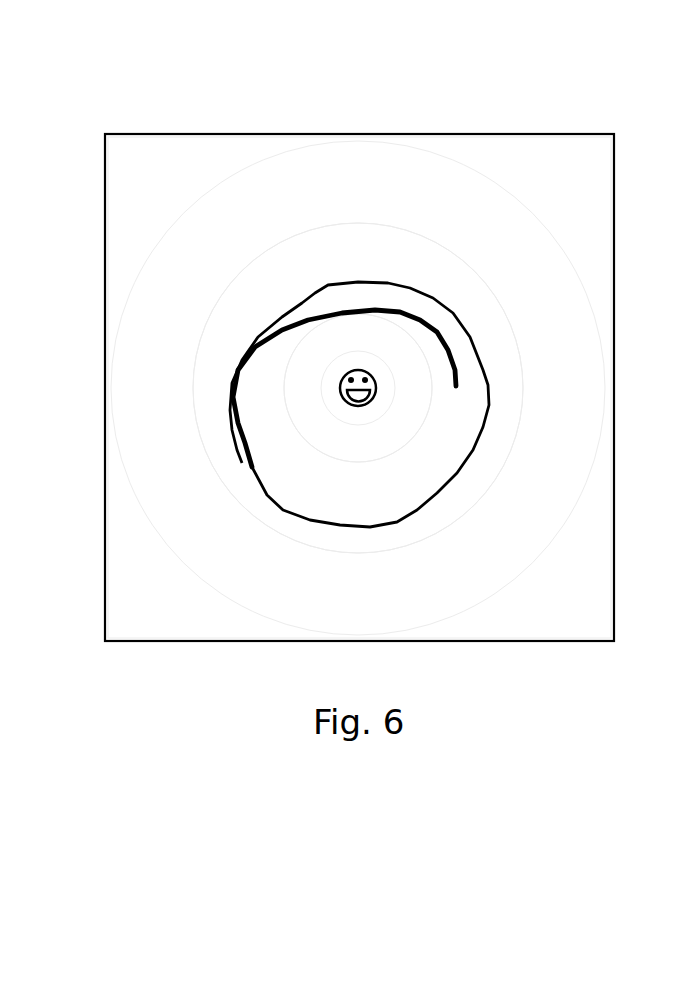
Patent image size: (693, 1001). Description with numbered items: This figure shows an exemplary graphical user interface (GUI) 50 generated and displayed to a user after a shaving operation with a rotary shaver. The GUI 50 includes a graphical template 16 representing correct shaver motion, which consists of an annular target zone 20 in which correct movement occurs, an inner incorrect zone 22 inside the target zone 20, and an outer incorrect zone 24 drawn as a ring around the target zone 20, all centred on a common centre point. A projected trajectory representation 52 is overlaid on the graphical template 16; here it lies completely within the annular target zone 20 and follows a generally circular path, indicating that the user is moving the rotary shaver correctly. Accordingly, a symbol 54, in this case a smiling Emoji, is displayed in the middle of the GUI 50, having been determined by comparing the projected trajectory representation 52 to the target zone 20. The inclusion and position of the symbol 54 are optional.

The graphical user interface 50 is at (177, 133).
The graphical template 16 is at (157, 175).
The outer incorrect zone 24 is at (505, 223).
The annular target zone 20 is at (505, 363).
The inner incorrect zone 22 is at (412, 413).
The symbol 54 is at (342, 362).
The projected trajectory representation 52 is at (240, 430).